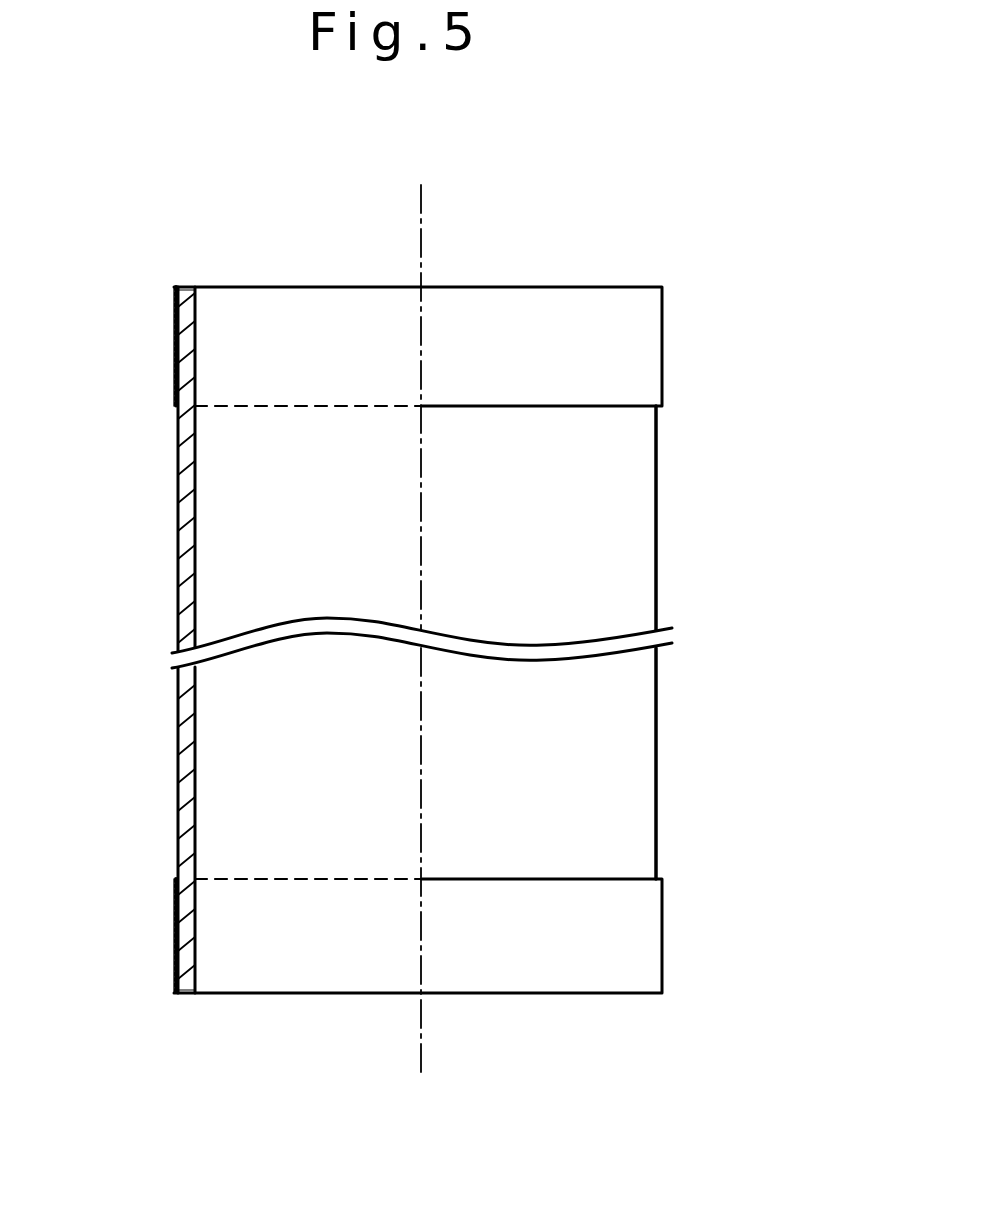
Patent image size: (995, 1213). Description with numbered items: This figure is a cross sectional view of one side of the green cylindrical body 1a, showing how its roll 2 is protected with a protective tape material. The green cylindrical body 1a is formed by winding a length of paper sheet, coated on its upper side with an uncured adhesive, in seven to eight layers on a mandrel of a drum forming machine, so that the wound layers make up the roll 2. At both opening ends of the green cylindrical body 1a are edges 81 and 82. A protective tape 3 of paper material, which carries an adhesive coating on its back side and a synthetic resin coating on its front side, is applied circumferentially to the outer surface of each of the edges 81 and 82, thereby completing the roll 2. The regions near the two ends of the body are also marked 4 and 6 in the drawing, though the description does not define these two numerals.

The green cylindrical body 1a is at (708, 508).
The roll 2 is at (618, 792).
The protective tape 3 is at (178, 338).
The upper end cap 4 is at (503, 272).
The lower end cap 6 is at (527, 1020).
The edge 81 is at (188, 983).
The edge 82 is at (182, 297).